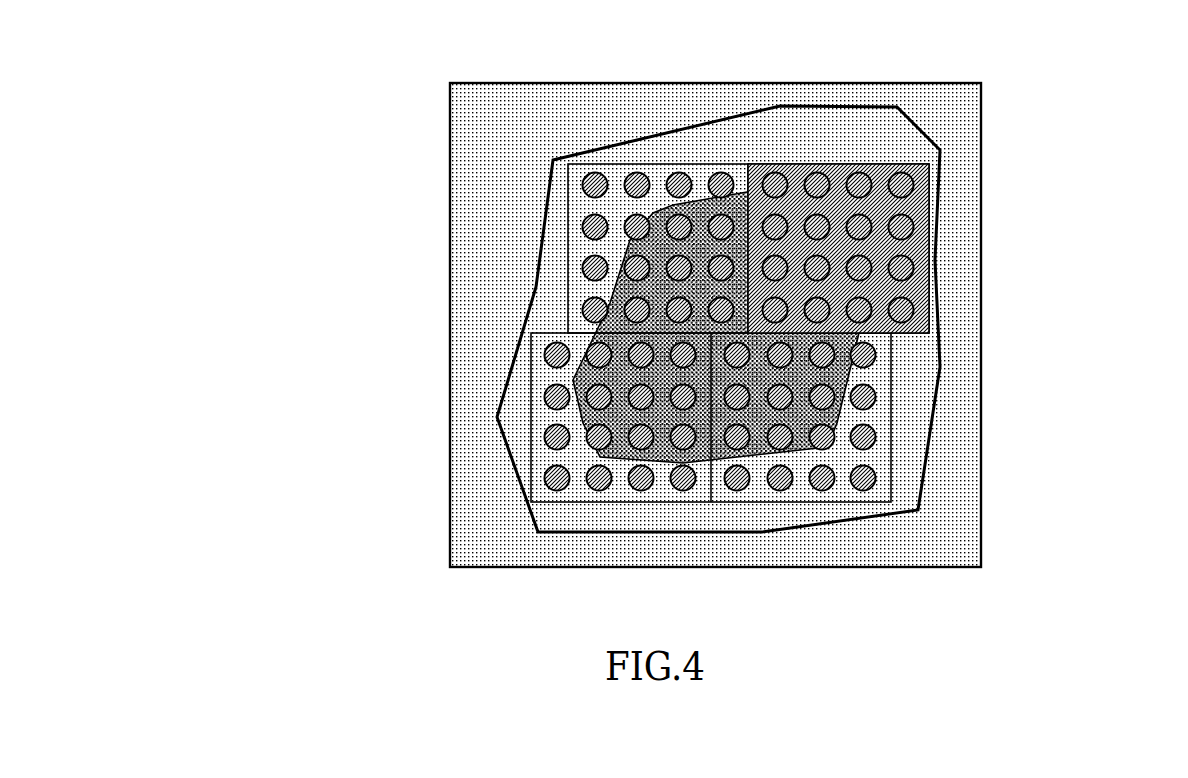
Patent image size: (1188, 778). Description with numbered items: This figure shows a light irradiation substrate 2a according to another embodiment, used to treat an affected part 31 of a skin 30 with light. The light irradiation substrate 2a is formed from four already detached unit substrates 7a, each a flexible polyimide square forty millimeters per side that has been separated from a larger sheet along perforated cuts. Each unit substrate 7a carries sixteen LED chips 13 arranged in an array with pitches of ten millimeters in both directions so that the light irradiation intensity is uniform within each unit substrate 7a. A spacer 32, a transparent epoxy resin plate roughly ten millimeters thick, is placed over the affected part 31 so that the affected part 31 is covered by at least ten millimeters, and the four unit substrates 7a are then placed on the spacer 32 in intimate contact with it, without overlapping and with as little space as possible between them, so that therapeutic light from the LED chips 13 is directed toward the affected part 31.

The light irradiation substrate 2a is at (668, 268).
The unit substrate 7a is at (957, 183).
The LED chip 13 is at (913, 185).
The skin 30 is at (473, 156).
The affected part 31 is at (620, 292).
The spacer 32 is at (505, 372).